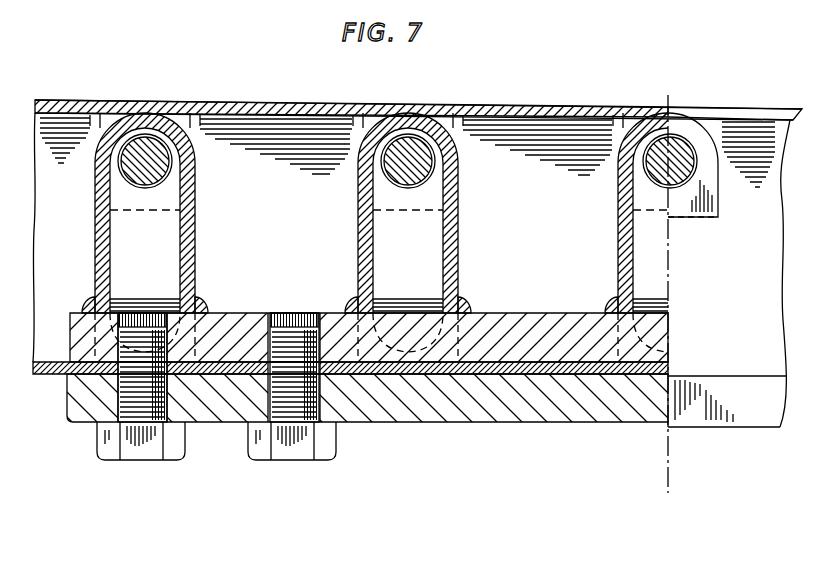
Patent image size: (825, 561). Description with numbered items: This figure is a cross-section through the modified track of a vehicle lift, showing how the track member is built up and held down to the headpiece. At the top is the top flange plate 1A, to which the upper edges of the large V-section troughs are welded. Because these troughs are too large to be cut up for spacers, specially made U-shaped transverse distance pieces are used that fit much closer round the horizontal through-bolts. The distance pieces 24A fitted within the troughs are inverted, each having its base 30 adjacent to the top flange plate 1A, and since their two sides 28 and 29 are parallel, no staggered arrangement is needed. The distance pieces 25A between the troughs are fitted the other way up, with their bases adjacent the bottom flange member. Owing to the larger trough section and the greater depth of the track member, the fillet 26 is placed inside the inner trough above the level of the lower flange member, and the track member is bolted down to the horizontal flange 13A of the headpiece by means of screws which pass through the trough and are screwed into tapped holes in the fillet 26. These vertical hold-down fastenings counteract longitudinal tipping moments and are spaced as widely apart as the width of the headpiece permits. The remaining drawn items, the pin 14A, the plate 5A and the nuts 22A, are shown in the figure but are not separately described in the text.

The top flange plate 1A is at (276, 100).
The base of distance piece 30 is at (138, 121).
The pin / rod in loop 14A is at (142, 165).
The side of distance piece 28 is at (93, 271).
The side of distance piece 29 is at (195, 290).
The distance piece 24A is at (197, 263).
The distance piece 25A is at (172, 330).
The fillet 26 is at (262, 318).
The base plate 5A is at (50, 373).
The horizontal flange 13A is at (225, 393).
The nut 22A is at (100, 438).